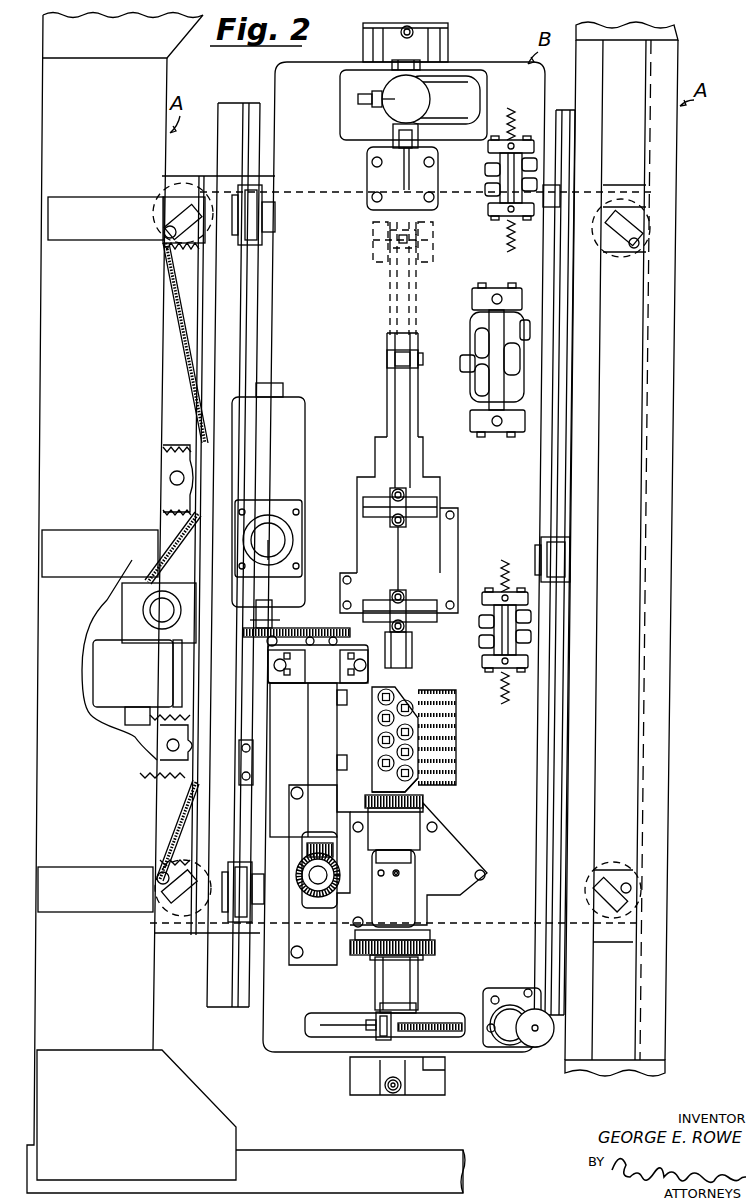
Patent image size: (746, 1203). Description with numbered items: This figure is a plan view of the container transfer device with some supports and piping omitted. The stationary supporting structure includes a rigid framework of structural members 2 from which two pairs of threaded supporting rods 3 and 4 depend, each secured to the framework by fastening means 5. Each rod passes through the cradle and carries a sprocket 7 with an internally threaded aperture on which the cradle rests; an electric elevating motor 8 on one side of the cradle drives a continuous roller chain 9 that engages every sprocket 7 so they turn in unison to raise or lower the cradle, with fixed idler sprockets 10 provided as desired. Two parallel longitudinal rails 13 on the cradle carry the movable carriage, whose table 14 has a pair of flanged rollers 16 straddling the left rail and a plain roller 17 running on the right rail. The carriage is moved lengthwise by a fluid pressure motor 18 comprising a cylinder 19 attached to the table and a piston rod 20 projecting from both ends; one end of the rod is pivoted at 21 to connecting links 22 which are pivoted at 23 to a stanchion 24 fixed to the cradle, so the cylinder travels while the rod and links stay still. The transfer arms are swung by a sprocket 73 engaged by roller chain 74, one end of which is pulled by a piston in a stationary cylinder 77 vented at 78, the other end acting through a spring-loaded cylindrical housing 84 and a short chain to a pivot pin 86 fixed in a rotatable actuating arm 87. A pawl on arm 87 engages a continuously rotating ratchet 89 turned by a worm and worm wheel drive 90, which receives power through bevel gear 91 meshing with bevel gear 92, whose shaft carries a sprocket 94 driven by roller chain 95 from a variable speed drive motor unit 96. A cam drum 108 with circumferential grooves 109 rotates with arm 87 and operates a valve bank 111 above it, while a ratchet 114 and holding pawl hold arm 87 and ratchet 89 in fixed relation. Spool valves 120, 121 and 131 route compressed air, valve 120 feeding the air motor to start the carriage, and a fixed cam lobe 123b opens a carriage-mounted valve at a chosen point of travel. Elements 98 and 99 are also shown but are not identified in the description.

The rigid framework of structural members 2 is at (678, 162).
The threaded supporting rods 3 is at (625, 212).
The threaded supporting rods 4 is at (172, 212).
The fastening means 5 is at (172, 223).
The sprocket 7 is at (185, 247).
The electric elevating motor 8 is at (137, 682).
The continuous roller chain 9 is at (168, 318).
The fixed idler sprockets 10 is at (173, 652).
The longitudinal rails 13 is at (248, 148).
The table 14 is at (328, 52).
The flanged rollers 16 is at (263, 214).
The plain roller 17 is at (566, 556).
The fluid pressure motor 18 is at (482, 540).
The cylinder 19 is at (370, 537).
The piston rod 20 is at (398, 398).
The pivot 21 is at (388, 360).
The connecting links 22 is at (380, 300).
The pivot 23 is at (382, 243).
The stanchion 24 is at (436, 258).
The sprocket 73 is at (380, 1023).
The roller chain 74 is at (376, 1020).
The stationary cylinder 77 is at (508, 1012).
The vent 78 is at (535, 1032).
The cylindrical housing 84 is at (370, 1031).
The pivot pin 86 is at (365, 1062).
The rotatable actuating arm 87 is at (418, 1003).
The ratchet 89 is at (436, 950).
The worm and worm wheel drive 90 is at (470, 870).
The bevel gear 91 is at (296, 878).
The bevel gear 92 is at (307, 848).
The sprocket 94 is at (355, 626).
The roller chain 95 is at (290, 626).
The variable speed drive motor unit 96 is at (290, 428).
The cylinder 98 is at (400, 963).
The cylinder 99 is at (420, 905).
The cam drum 108 is at (458, 752).
The circumferential grooves 109 is at (460, 738).
The valve bank 111 is at (431, 795).
The ratchet 114 is at (418, 802).
The spool valve 120 is at (516, 140).
The spool valve 121 is at (490, 633).
The fixed cam lobe 123b is at (250, 772).
The spool valve 131 is at (466, 432).